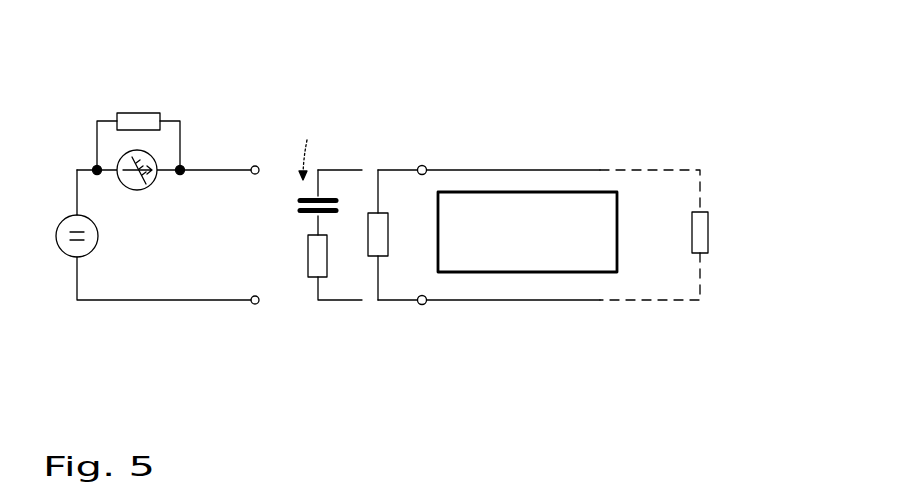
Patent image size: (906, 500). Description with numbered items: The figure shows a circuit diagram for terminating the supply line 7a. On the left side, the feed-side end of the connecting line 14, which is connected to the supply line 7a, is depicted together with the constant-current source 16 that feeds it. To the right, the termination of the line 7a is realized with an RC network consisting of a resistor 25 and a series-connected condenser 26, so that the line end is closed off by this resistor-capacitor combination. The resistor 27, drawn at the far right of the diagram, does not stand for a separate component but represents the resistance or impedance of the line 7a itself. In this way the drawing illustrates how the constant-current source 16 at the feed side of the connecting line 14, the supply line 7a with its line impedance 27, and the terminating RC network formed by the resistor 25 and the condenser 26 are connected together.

The connecting line 14 is at (217, 170).
The constant-current source 16 is at (143, 167).
The resistor 25 is at (315, 258).
The condenser 26 is at (337, 198).
The resistor 27 is at (697, 237).
The supply line 7a is at (573, 170).